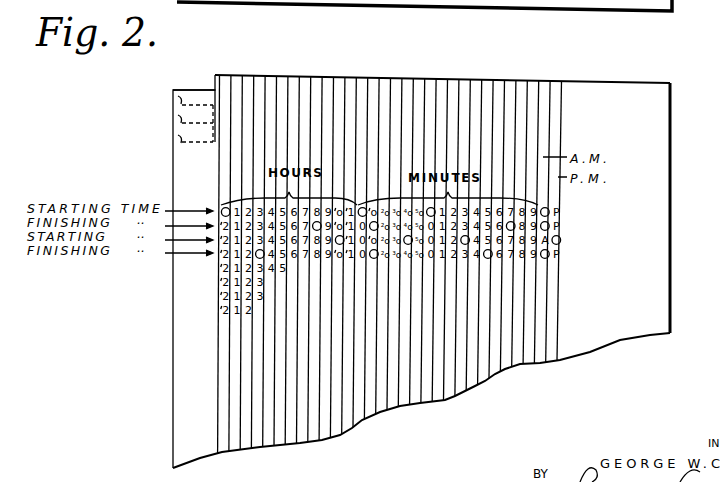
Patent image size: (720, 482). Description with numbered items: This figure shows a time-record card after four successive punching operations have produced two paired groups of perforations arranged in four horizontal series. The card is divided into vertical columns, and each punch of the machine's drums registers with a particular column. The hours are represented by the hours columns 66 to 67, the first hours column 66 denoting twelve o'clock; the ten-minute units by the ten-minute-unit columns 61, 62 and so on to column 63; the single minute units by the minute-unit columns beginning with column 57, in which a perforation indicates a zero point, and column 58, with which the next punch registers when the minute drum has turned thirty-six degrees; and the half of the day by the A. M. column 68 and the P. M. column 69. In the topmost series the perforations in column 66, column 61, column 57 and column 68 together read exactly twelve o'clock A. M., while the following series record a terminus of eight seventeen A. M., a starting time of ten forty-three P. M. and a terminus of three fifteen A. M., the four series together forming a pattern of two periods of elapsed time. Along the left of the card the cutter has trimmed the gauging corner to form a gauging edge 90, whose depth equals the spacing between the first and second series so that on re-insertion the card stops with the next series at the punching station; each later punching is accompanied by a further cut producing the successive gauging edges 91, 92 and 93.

The gauging edge 90 is at (192, 88).
The gauging edge 91 is at (178, 96).
The gauging edge 92 is at (178, 115).
The gauging edge 93 is at (178, 135).
The hours column 66 is at (228, 75).
The hours column 67 is at (353, 78).
The ten-minute-unit column 61 is at (363, 77).
The ten-minute-unit column 62 is at (374, 80).
The ten-minute-unit column 63 is at (420, 79).
The minute-unit column 57 is at (445, 89).
The minute-unit column 58 is at (458, 80).
The A. M. column 68 is at (543, 87).
The P. M. column 69 is at (560, 88).